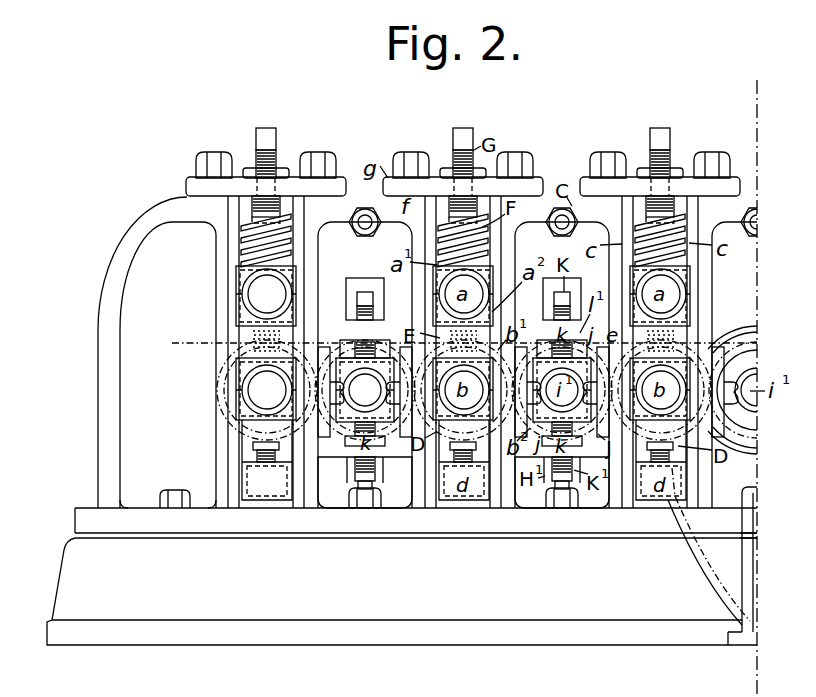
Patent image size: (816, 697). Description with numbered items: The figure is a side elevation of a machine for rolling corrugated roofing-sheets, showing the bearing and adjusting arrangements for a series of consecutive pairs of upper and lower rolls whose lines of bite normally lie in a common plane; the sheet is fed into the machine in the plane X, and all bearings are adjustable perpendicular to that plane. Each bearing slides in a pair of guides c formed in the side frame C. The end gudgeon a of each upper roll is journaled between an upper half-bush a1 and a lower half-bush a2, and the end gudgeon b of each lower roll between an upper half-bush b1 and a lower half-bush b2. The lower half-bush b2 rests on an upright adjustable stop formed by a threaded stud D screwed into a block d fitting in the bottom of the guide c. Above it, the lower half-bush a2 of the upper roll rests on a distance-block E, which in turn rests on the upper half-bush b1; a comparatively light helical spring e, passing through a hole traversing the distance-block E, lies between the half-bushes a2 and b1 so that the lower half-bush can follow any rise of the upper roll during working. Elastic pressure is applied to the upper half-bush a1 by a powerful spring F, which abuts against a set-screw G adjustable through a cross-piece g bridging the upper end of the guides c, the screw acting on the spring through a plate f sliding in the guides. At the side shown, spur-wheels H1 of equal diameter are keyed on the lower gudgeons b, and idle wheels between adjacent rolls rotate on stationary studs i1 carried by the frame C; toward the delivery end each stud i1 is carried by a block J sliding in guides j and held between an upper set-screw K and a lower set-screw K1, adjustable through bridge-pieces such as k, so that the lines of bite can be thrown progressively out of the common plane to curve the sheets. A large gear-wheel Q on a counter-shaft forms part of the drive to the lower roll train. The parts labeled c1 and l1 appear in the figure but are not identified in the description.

The set-screw G is at (277, 150).
The cross-piece g is at (190, 178).
The side frame C is at (140, 232).
The guides c is at (494, 241).
The guide rail c1 is at (234, 243).
The plate f is at (283, 205).
The spring F is at (290, 238).
The end gudgeon a is at (266, 294).
The upper half-bush a1 is at (240, 272).
The lower half-bush a2 is at (298, 305).
The distance-block E is at (246, 343).
The feed plane X is at (457, 343).
The end gudgeon b is at (266, 390).
The upper half-bush b1 is at (237, 367).
The lower half-bush b2 is at (239, 408).
The spur-wheel H1 is at (214, 392).
The stud D is at (254, 438).
The block d is at (267, 460).
The upper set-screw K is at (367, 292).
The screw housing l1 is at (383, 333).
The bridge-piece k is at (365, 340).
The stationary stud i1 is at (365, 390).
The block J is at (335, 432).
The guides j is at (398, 401).
The helical spring e is at (360, 377).
The lower set-screw K1 is at (354, 478).
The gear-wheel Q is at (690, 567).